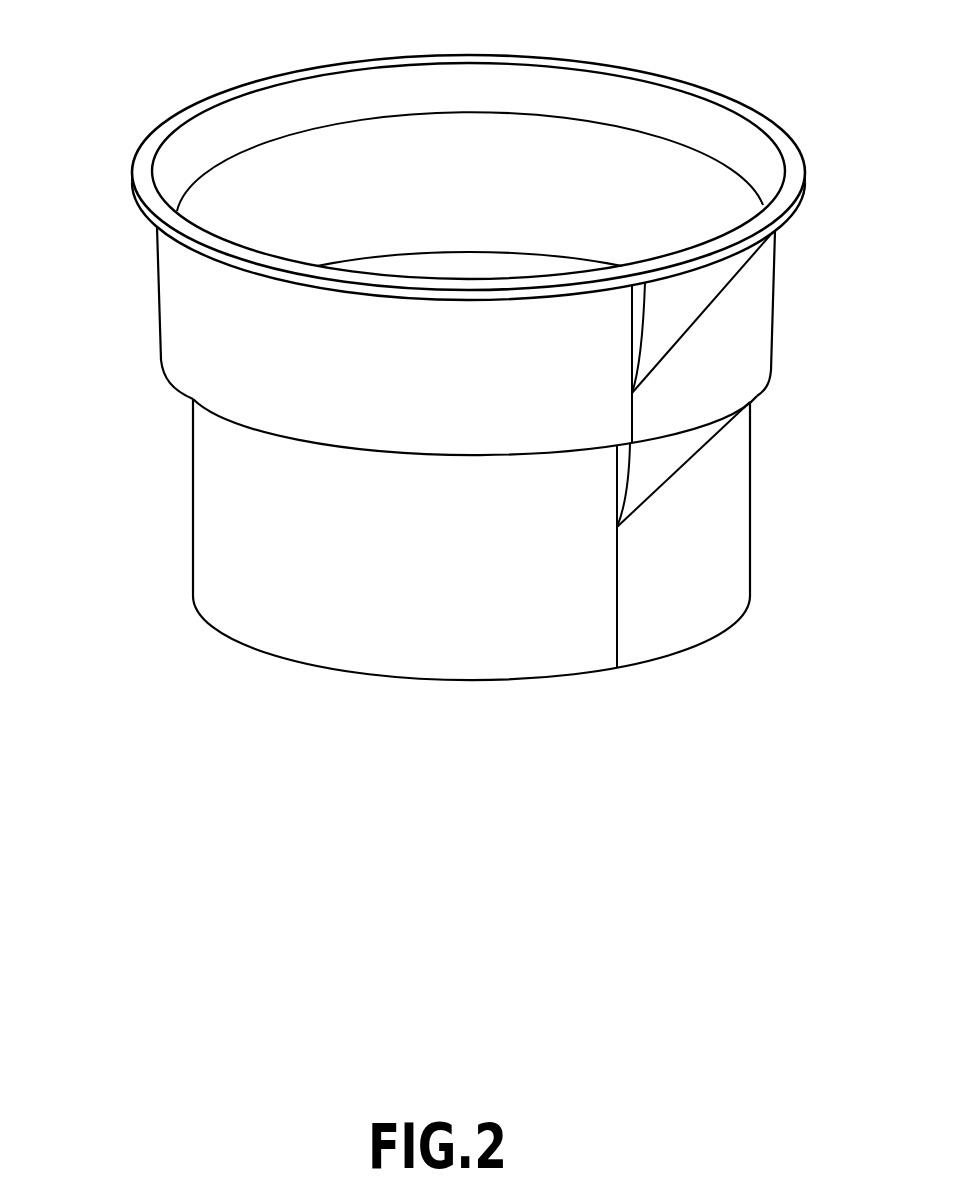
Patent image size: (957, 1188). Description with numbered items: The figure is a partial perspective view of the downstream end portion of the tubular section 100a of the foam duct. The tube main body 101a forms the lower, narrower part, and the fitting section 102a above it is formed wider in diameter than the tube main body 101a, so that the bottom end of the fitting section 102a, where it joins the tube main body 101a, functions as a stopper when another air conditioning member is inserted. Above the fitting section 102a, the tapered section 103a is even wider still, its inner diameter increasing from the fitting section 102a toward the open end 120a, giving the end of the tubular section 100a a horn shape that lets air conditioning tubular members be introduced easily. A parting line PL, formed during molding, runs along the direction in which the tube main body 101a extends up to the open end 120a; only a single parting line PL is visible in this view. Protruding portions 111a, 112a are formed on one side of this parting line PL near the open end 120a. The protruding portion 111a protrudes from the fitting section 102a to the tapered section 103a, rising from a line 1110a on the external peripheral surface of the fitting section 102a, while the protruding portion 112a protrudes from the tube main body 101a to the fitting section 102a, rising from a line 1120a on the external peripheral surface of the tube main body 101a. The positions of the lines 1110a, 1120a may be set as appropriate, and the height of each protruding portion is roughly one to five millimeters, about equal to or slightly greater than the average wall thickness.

The tubular section 100a is at (454, 345).
The tube main body 101a is at (212, 510).
The fitting section 102a is at (187, 298).
The tapered section 103a is at (137, 203).
The open end 120a is at (263, 114).
The protruding portion 111a is at (747, 337).
The line 1110a is at (699, 335).
The protruding portion 112a is at (727, 534).
The line 1120a is at (675, 488).
The parting line PL is at (628, 592).